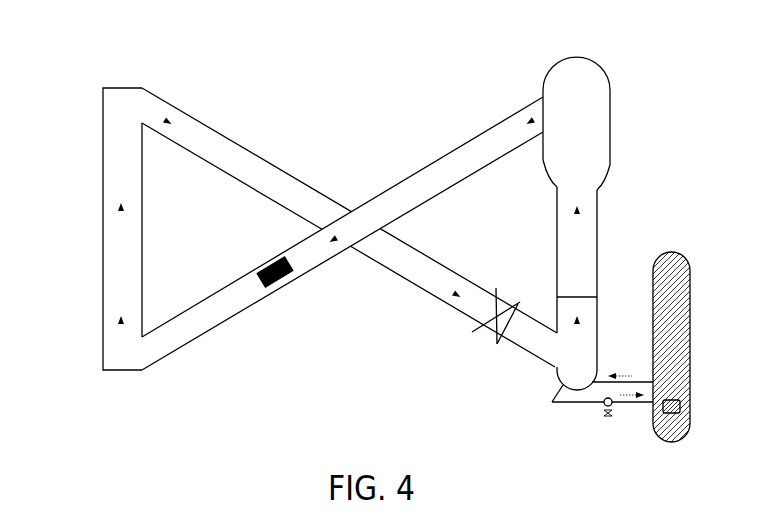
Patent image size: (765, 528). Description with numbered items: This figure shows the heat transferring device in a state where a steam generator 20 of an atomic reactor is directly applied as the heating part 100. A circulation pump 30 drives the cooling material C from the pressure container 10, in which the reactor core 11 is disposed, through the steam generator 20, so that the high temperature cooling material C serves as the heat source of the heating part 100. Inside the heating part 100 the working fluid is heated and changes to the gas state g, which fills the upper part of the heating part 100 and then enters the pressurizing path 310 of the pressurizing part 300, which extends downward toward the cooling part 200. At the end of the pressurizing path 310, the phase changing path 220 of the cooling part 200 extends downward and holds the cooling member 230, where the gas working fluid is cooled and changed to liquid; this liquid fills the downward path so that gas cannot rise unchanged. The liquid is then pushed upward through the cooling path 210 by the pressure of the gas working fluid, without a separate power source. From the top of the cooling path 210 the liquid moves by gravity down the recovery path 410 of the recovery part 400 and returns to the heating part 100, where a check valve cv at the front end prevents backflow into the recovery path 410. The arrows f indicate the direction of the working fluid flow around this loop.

The heating part 100 is at (351, 28).
The cooling part 200 is at (351, 51).
The pressure container 10 is at (690, 303).
The reactor core 11 is at (680, 408).
The steam generator 20 is at (608, 123).
The circulation pump 30 is at (608, 408).
The cooling path 210 is at (102, 272).
The phase changing path 220 is at (182, 348).
The cooling member 230 is at (287, 298).
The pressurizing part 300 is at (431, 229).
The pressurizing path 310 is at (330, 262).
The recovery part 400 is at (349, 227).
The recovery path 410 is at (260, 158).
The fluid flow f is at (215, 128).
The gas state g is at (602, 173).
The check valve cv is at (496, 344).
The cooling material C is at (690, 353).